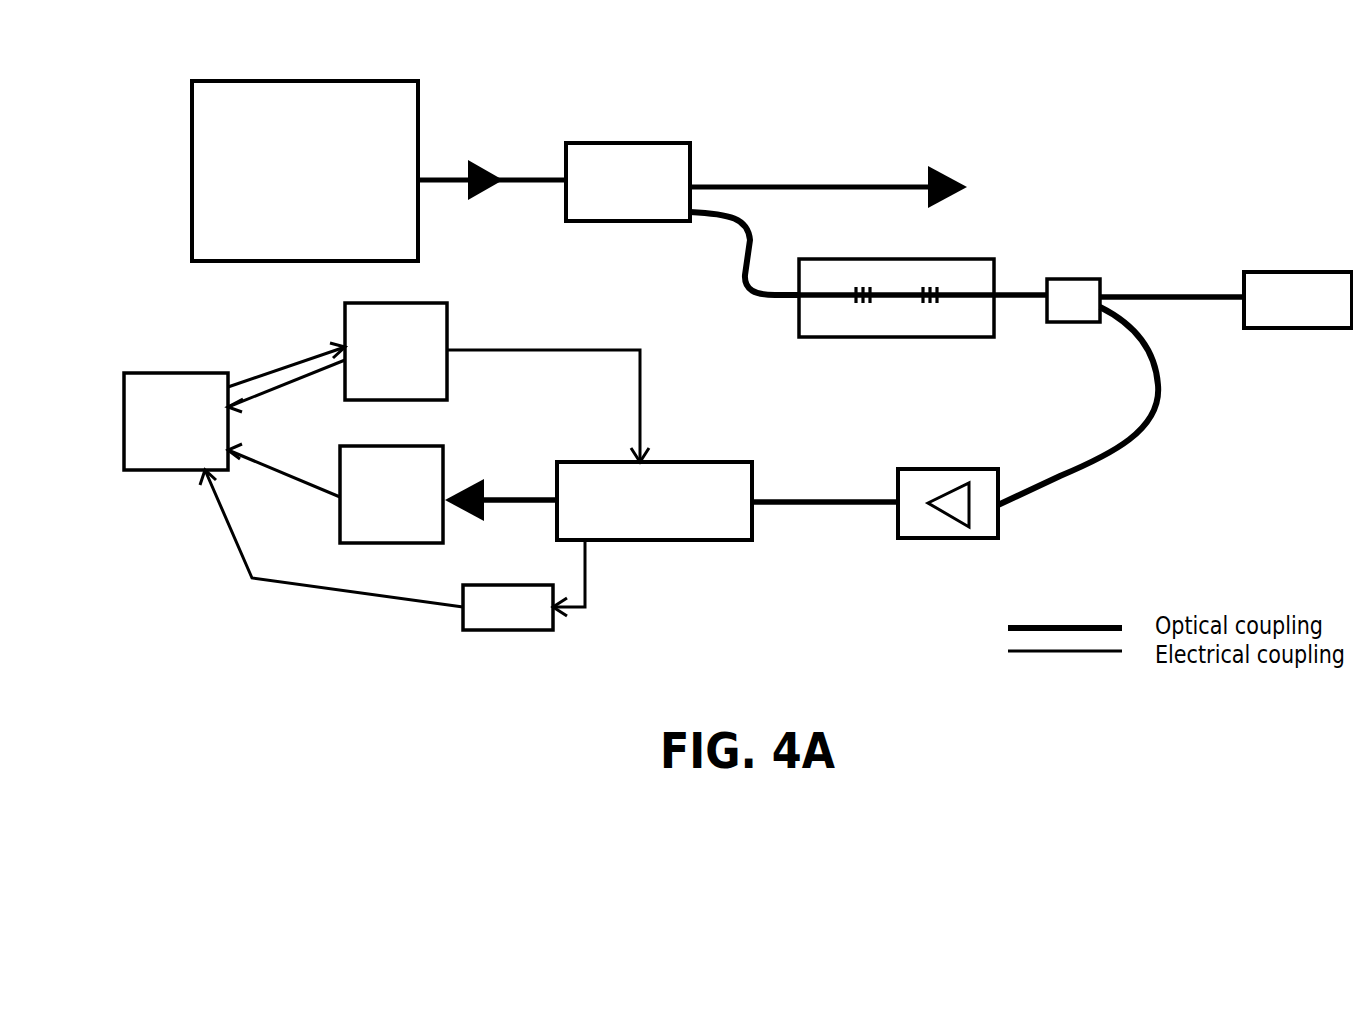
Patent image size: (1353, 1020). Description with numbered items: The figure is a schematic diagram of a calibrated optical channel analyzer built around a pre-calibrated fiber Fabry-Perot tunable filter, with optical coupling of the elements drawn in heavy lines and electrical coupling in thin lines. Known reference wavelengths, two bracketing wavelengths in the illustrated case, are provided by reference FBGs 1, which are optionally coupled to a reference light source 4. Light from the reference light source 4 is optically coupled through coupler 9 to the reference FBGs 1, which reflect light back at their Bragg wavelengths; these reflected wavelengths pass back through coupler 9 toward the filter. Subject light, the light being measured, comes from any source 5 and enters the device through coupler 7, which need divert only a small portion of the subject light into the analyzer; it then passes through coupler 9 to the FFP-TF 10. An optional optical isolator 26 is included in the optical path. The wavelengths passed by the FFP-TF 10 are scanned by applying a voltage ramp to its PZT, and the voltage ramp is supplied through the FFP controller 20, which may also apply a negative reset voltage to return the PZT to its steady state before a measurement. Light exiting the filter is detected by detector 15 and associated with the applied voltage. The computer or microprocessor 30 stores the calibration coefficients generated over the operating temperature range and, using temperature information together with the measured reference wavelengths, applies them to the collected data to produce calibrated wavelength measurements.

The reference FBGs 1 is at (828, 315).
The reference light source 4 is at (1298, 287).
The source of subject light 5 is at (317, 240).
The coupler 7 is at (625, 168).
The coupler 9 is at (1070, 295).
The FFP-TF 10 is at (690, 522).
The detector 15 is at (403, 517).
The FFP controller 20 is at (410, 372).
The optical isolator 26 is at (940, 485).
The computer or microprocessor 30 is at (183, 445).